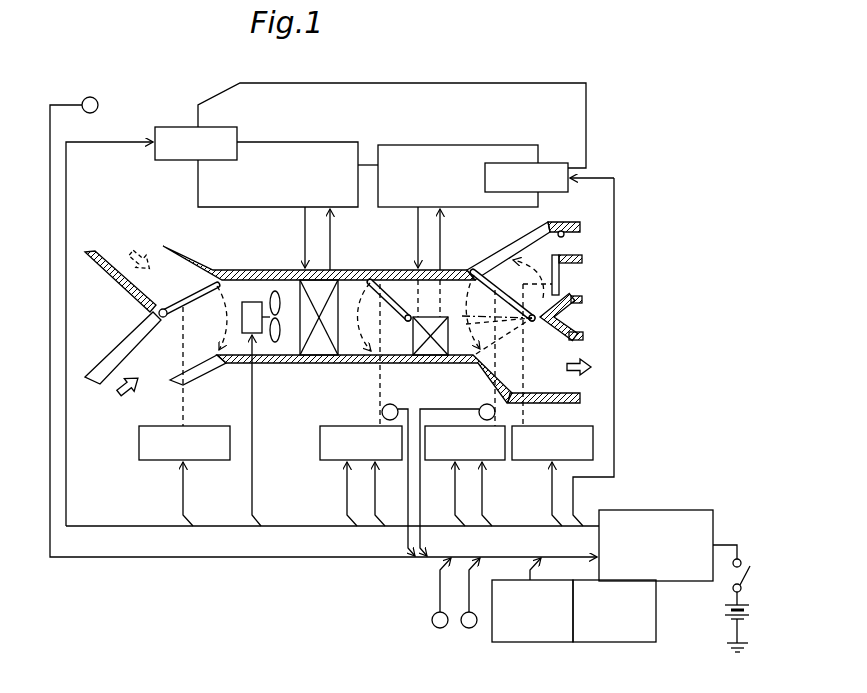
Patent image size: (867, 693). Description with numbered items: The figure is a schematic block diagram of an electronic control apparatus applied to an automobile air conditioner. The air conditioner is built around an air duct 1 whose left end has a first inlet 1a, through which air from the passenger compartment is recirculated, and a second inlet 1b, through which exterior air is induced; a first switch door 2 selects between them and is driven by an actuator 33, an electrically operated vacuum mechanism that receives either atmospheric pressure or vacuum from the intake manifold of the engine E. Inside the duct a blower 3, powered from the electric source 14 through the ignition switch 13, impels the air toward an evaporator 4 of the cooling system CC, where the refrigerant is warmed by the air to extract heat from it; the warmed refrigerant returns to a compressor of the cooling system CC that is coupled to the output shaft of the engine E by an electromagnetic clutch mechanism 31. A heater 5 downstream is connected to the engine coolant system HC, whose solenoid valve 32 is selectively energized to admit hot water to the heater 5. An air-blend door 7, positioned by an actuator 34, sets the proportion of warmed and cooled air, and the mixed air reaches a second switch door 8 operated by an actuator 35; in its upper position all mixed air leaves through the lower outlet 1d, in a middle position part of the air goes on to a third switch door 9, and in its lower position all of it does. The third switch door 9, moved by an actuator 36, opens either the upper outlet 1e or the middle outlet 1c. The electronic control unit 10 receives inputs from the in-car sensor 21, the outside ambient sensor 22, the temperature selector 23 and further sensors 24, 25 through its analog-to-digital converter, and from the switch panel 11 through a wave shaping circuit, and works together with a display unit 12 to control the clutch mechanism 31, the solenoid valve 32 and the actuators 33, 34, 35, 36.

The engine E is at (498, 83).
The cooling system CC is at (232, 207).
The coolant system HC is at (400, 207).
The air duct 1 is at (258, 270).
The first inlet 1a is at (97, 386).
The second inlet 1b is at (113, 262).
The middle outlet 1c is at (580, 298).
The lower outlet 1d is at (572, 402).
The upper outlet 1e is at (565, 224).
The first switch door 2 is at (193, 294).
The blower 3 is at (261, 316).
The evaporator 4 is at (320, 356).
The heater 5 is at (432, 356).
The air-blend door 7 is at (392, 289).
The second switch door 8 is at (496, 262).
The third switch door 9 is at (559, 282).
The electronic control unit 10 is at (650, 510).
The switch panel 11 is at (545, 643).
The display unit 12 is at (620, 643).
The ignition switch 13 is at (733, 585).
The electric source 14 is at (730, 617).
The in-car sensor 21 is at (432, 618).
The outside ambient sensor 22 is at (98, 103).
The temperature selector 23 is at (466, 628).
The sensor 24 is at (392, 404).
The sensor 25 is at (480, 406).
The electromagnetic clutch mechanism 31 is at (175, 127).
The solenoid valve 32 is at (553, 163).
The actuator 33 is at (222, 426).
The actuator 34 is at (333, 426).
The actuator 35 is at (497, 460).
The actuator 36 is at (530, 460).